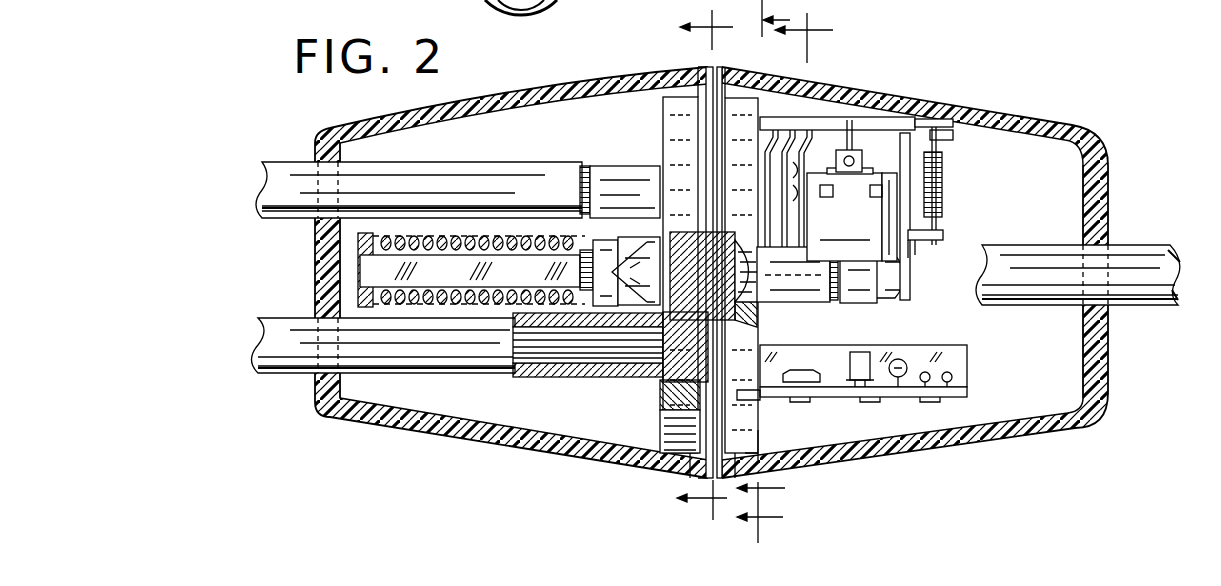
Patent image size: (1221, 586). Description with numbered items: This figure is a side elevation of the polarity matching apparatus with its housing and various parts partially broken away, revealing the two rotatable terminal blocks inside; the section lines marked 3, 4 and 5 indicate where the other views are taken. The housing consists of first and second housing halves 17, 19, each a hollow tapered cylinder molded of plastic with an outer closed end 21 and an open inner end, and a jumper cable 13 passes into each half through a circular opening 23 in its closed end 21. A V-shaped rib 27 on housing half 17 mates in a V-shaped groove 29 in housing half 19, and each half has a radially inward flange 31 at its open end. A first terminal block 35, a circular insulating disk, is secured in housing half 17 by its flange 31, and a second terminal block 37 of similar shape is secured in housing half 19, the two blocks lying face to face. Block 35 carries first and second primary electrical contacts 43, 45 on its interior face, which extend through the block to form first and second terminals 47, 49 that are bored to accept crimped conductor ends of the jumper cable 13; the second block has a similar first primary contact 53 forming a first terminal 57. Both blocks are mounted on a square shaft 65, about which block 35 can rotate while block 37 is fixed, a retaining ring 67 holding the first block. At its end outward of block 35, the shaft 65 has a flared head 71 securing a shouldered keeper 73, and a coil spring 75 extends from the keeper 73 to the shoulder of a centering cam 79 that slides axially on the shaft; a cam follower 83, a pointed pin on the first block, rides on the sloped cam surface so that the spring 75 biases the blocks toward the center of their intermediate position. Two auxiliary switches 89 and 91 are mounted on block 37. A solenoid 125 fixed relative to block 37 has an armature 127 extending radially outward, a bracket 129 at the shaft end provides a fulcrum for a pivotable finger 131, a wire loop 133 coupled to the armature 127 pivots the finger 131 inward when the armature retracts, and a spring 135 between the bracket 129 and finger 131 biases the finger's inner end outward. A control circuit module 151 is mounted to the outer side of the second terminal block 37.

The jumper cable 13 is at (255, 178).
The first housing half 17 is at (432, 437).
The second housing half 19 is at (960, 447).
The closed end 21 is at (1108, 193).
The circular opening 23 is at (318, 143).
The V-shaped rib 27 is at (704, 76).
The V-shaped groove 29 is at (710, 70).
The radially inward flange 31 is at (680, 474).
The first terminal block 35 is at (665, 128).
The second terminal block 37 is at (762, 425).
The first primary electrical contact 43 is at (726, 150).
The second primary electrical contact 45 is at (664, 425).
The first terminal 47 is at (603, 165).
The second terminal 49 is at (605, 400).
The first primary contact 53 is at (725, 325).
The first terminal 57 is at (802, 297).
The square shaft 65 is at (430, 272).
The retaining ring 67 is at (668, 378).
The flared head 71 is at (357, 265).
The shouldered keeper 73 is at (362, 298).
The coil spring 75 is at (490, 305).
The centering cam 79 is at (612, 268).
The cam follower 83 is at (600, 360).
The first auxiliary switch 89 is at (850, 150).
The second auxiliary switch 91 is at (820, 120).
The solenoid 125 is at (852, 214).
The solenoid armature 127 is at (935, 128).
The bracket 129 is at (912, 255).
The pivotable finger 131 is at (790, 145).
The wire loop 133 is at (905, 135).
The spring 135 is at (940, 190).
The control circuit module 151 is at (852, 373).
The section line FIG. 3 is at (763, 271).
The section line FIG. 4 is at (785, 275).
The section line FIG. 5 is at (706, 263).